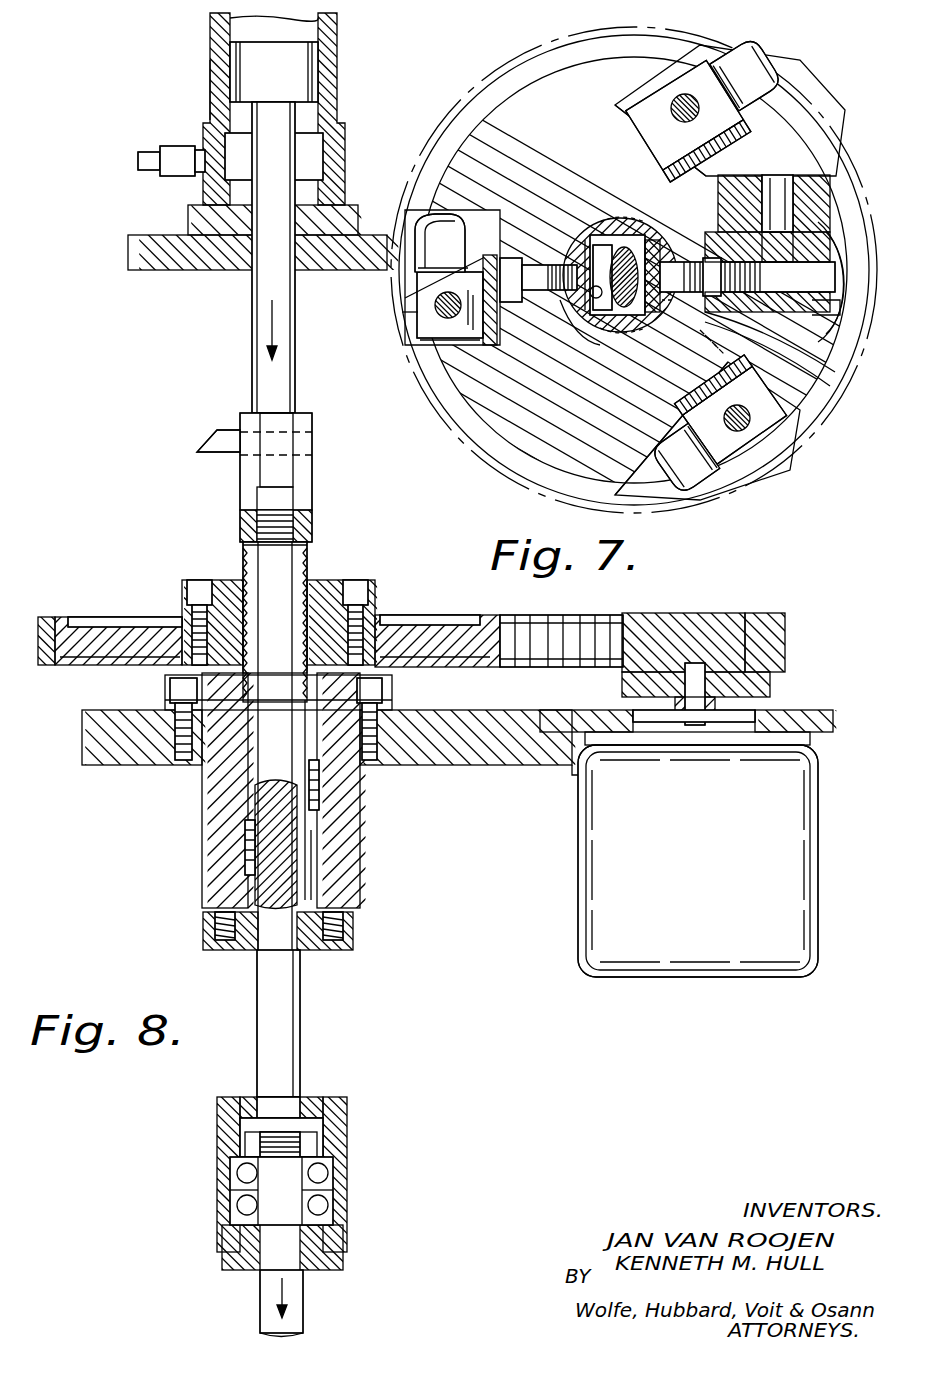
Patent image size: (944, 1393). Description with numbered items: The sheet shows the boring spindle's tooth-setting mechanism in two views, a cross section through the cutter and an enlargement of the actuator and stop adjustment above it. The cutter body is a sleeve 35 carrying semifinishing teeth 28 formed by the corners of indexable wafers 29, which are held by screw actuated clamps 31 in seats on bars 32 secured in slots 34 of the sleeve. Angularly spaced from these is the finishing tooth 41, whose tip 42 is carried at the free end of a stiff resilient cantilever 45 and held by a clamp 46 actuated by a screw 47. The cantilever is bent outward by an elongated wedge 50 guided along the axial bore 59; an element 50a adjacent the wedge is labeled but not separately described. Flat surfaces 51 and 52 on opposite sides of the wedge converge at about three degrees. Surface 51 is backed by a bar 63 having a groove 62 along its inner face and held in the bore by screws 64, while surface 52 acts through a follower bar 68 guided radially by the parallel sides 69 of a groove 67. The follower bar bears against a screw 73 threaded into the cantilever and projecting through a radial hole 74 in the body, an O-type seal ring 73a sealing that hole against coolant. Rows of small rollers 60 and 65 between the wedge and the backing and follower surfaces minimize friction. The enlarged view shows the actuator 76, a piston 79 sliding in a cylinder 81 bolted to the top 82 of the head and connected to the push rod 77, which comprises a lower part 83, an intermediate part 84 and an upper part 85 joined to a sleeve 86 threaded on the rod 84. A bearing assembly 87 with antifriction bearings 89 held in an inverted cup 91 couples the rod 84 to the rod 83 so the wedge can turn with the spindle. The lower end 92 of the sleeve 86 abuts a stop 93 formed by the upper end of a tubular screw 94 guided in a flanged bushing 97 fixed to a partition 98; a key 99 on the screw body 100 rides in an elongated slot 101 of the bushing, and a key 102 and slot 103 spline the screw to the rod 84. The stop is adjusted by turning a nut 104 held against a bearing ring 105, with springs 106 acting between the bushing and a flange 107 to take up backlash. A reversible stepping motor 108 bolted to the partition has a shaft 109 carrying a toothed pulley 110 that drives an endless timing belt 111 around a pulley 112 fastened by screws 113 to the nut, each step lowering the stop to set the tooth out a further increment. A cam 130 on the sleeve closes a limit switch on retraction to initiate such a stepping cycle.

In FIG. 7, the teeth 28 is at (420, 255).
In FIG. 7, the indexable wafers 29 is at (418, 282).
In FIG. 7, the screw actuated clamps 31 is at (470, 252).
In FIG. 7, the bars 32 is at (418, 322).
In FIG. 7, the slot 34 is at (478, 255).
In FIG. 7, the sleeve 35 is at (575, 416).
In FIG. 7, the finishing tooth 41 is at (840, 252).
In FIG. 7, the tooth tip 42 is at (835, 305).
In FIG. 7, the cantilever 45 is at (774, 203).
In FIG. 7, the clamp 46 is at (815, 332).
In FIG. 7, the screw 47 is at (810, 356).
In FIG. 7, the wedge 50 is at (655, 228).
In FIG. 7, the housing 50a is at (825, 218).
In FIG. 7, the flat surface 51 is at (583, 246).
In FIG. 7, the flat surface 52 is at (662, 246).
In FIG. 7, the axial bore 59 is at (588, 292).
In FIG. 7, the rollers 60 is at (592, 256).
In FIG. 7, the groove 62 is at (620, 330).
In FIG. 7, the backing bar 63 is at (610, 305).
In FIG. 7, the screws 64 is at (520, 262).
In FIG. 7, the rollers 65 is at (665, 262).
In FIG. 7, the groove 67 is at (668, 306).
In FIG. 7, the follower bar 68 is at (690, 296).
In FIG. 7, the parallel sides 69 is at (626, 222).
In FIG. 7, the screw 73 is at (747, 277).
In FIG. 7, the O-type seal ring 73a is at (753, 203).
In FIG. 7, the radial hole 74 is at (715, 298).
In FIG. 8, the actuator 76 is at (342, 60).
In FIG. 8, the push rod 77 is at (318, 990).
In FIG. 8, the piston 79 is at (232, 60).
In FIG. 8, the cylinder 81 is at (215, 105).
In FIG. 8, the top of the head 82 is at (137, 238).
In FIG. 8, the lower push rod part 83 is at (305, 1316).
In FIG. 8, the intermediate push rod part 84 is at (284, 640).
In FIG. 8, the upper push rod part 85 is at (252, 295).
In FIG. 8, the sleeve 86 is at (312, 470).
In FIG. 8, the bearing assembly 87 is at (352, 1142).
In FIG. 8, the antifriction bearings 89 is at (238, 1205).
In FIG. 8, the inverted cup 91 is at (340, 1100).
In FIG. 8, the lower end of sleeve 92 is at (312, 530).
In FIG. 8, the stop 93 is at (240, 526).
In FIG. 8, the tubular screw 94 is at (312, 572).
In FIG. 8, the flanged bushing 97 is at (206, 806).
In FIG. 8, the partition 98 is at (505, 766).
In FIG. 8, the key 99 is at (321, 790).
In FIG. 8, the screw body 100 is at (318, 842).
In FIG. 8, the elongated slot 101 is at (316, 882).
In FIG. 8, the key 102 is at (248, 860).
In FIG. 8, the slot 103 is at (258, 946).
In FIG. 8, the nut 104 is at (215, 582).
In FIG. 8, the bearing ring 105 is at (276, 719).
In FIG. 8, the springs 106 is at (215, 926).
In FIG. 8, the flange 107 is at (205, 946).
In FIG. 8, the electric stepping motor 108 is at (708, 856).
In FIG. 8, the motor shaft 109 is at (695, 640).
In FIG. 8, the toothed pulley 110 is at (762, 620).
In FIG. 8, the endless timing belt 111 is at (46, 618).
In FIG. 8, the pulley 112 is at (420, 622).
In FIG. 8, the screws 113 is at (190, 590).
In FIG. 8, the cam 130 is at (212, 446).